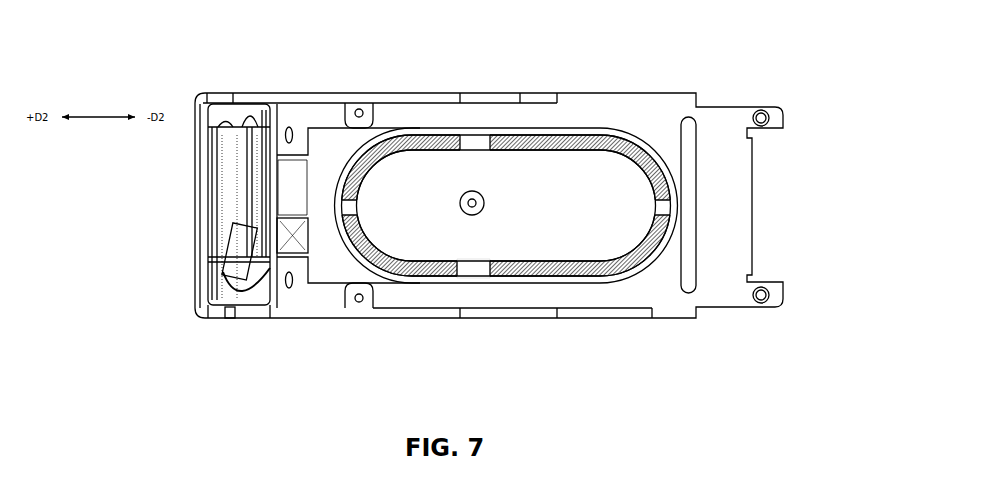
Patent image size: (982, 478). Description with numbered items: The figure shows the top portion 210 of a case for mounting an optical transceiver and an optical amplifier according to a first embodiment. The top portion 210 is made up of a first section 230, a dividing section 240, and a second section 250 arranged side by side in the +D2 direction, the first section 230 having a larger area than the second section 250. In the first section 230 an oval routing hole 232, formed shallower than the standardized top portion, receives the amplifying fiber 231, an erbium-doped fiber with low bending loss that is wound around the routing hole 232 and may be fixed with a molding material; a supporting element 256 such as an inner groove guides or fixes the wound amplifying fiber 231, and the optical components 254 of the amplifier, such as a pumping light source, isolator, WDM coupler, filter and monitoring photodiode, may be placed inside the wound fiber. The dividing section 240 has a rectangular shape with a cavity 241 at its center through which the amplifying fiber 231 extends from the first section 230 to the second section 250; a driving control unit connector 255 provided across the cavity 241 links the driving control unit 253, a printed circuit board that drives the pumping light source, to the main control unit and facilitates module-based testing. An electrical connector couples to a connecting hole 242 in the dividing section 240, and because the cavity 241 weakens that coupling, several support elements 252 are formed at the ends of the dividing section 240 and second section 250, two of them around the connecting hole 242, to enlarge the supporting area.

The top portion 210 is at (722, 79).
The first section 230 is at (514, 209).
The amplifying fiber 231 is at (605, 128).
The routing hole 232 is at (521, 140).
The dividing section 240 is at (318, 305).
The cavity 241 is at (297, 167).
The connecting hole 242 is at (290, 126).
The second section 250 is at (181, 208).
The support elements 252 is at (215, 292).
The driving control unit 253 is at (224, 190).
The optical components 254 is at (232, 128).
The driving control unit connector 255 is at (292, 289).
The supporting element 256 is at (479, 276).